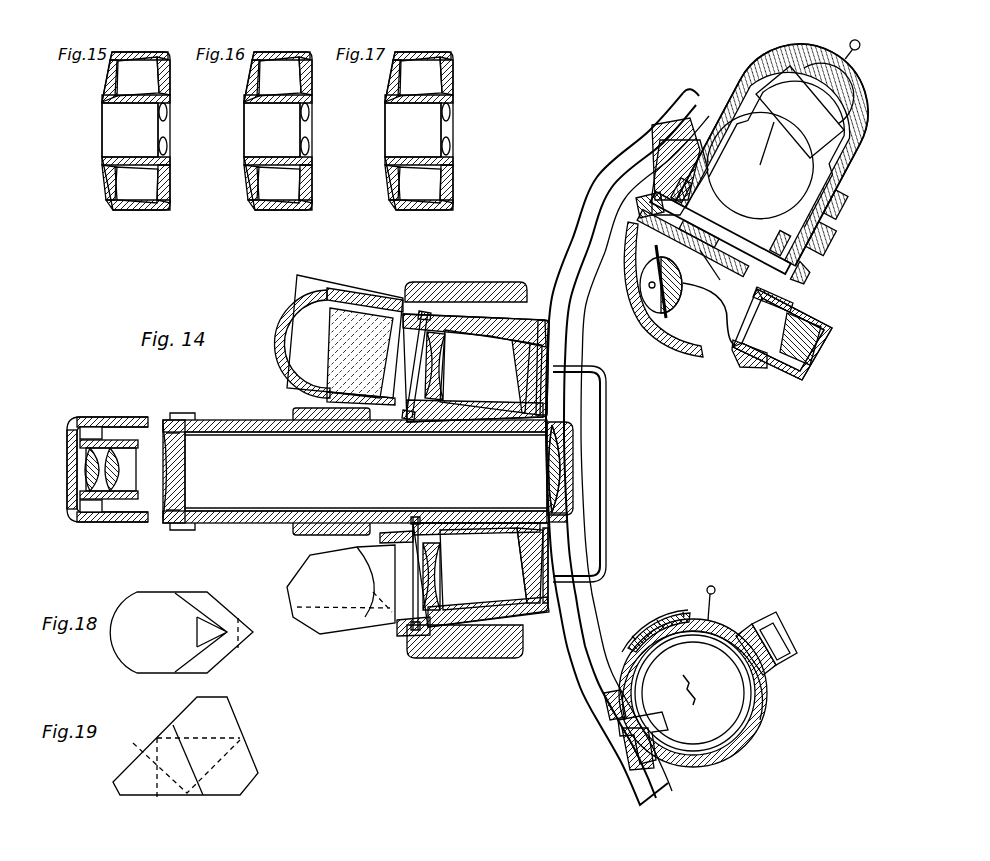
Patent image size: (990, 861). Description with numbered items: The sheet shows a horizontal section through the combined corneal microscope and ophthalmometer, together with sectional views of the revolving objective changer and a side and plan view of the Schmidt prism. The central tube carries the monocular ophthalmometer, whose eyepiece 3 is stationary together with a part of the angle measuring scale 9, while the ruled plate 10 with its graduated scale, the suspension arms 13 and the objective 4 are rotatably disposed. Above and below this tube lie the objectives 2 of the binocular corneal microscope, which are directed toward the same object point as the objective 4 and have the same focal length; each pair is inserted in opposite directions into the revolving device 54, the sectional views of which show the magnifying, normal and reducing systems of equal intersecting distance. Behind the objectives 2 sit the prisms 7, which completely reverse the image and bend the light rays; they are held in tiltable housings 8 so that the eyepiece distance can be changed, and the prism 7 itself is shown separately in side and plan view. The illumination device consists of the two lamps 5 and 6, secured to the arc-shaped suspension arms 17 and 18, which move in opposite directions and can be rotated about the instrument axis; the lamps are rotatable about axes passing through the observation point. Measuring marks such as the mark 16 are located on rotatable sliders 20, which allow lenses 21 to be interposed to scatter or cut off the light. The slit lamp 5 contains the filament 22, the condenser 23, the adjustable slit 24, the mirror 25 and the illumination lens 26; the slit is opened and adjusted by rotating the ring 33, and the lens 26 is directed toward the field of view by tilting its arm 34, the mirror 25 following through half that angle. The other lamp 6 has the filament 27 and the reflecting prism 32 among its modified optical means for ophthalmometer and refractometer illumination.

In FIG. 14, the objectives 2 is at (540, 356).
In FIG. 14, the eyepiece 3 is at (70, 467).
In FIG. 14, the objective 4 is at (580, 471).
In FIG. 14, the lamp 5 is at (833, 109).
In FIG. 14, the lamp 6 is at (732, 702).
In FIG. 14, the prisms 7 is at (293, 658).
In FIG. 18, the prisms 7 is at (230, 653).
In FIG. 19, the prisms 7 is at (235, 717).
In FIG. 14, the tiltable housings 8 is at (300, 357).
In FIG. 14, the angle measuring device or scale 9 is at (175, 430).
In FIG. 14, the ruled plate 10 is at (170, 508).
In FIG. 14, the suspension arms 13 is at (566, 518).
In FIG. 14, the measuring mark 16 is at (788, 670).
In FIG. 14, the suspension arm 17 is at (680, 112).
In FIG. 14, the suspension arm 18 is at (618, 177).
In FIG. 14, the rotatable sliders 20 is at (833, 205).
In FIG. 14, the lenses 21 is at (812, 240).
In FIG. 14, the filament 22 is at (675, 165).
In FIG. 14, the condenser 23 is at (645, 203).
In FIG. 14, the adjustable slit 24 is at (708, 247).
In FIG. 14, the mirror 25 is at (662, 313).
In FIG. 14, the illumination lens 26 is at (800, 345).
In FIG. 14, the filament 27 is at (702, 705).
In FIG. 14, the reflecting prism 32 is at (784, 634).
In FIG. 14, the ring 33 is at (796, 276).
In FIG. 14, the arm 34 is at (750, 368).
In FIG. 14, the revolving device 54 is at (507, 285).